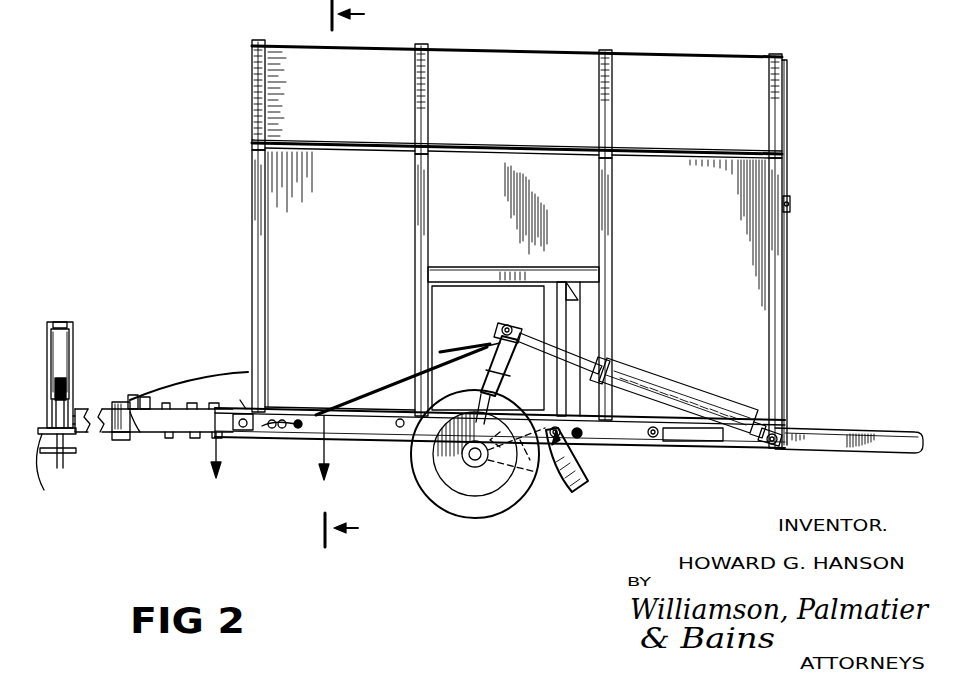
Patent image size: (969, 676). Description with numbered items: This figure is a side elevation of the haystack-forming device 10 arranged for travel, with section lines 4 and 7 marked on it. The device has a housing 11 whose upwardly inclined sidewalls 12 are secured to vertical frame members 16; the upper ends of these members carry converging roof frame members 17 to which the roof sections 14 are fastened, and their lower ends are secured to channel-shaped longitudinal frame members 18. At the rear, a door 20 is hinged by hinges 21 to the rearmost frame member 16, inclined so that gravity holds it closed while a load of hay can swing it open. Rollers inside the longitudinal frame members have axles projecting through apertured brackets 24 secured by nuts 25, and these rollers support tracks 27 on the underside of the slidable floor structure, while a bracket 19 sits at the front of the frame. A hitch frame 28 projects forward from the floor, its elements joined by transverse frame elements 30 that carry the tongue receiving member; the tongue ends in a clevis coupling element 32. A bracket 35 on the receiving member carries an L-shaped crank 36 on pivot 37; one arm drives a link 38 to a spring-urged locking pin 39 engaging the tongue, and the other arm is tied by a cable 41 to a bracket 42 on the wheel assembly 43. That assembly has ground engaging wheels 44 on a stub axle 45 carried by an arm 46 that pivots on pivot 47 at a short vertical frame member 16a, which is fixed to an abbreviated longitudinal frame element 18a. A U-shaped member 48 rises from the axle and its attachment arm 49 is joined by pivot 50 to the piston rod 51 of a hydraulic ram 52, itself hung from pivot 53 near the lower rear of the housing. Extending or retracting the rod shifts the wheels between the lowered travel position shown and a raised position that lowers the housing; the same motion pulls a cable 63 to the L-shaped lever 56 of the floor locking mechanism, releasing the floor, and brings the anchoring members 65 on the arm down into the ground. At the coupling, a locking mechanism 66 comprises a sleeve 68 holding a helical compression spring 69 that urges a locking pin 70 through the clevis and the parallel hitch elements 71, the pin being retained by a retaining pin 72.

The haystack-forming device 10 is at (126, 76).
The section line 4 is at (334, 273).
The section line 7 is at (268, 461).
The housing 11 is at (776, 138).
The sidewall 12 is at (757, 234).
The roof section 14 is at (722, 68).
The vertical frame member 16 is at (252, 190).
The roof frame member 17 is at (252, 73).
The short vertical frame member 16a is at (573, 282).
The longitudinal frame member 18 is at (690, 446).
The longitudinal frame element 18a is at (460, 267).
The frame bracket 19 is at (250, 400).
The rear closure member 20 is at (790, 328).
The hinge 21 is at (792, 198).
The apertured bracket 24 is at (723, 450).
The nut 25 is at (654, 450).
The track 27 is at (872, 436).
The hitch frame 28 is at (165, 440).
The transverse frame element 30 is at (232, 403).
The coupling element 32 is at (76, 408).
The bracket 35 is at (162, 398).
The L-shaped crank 36 is at (150, 388).
The pivot 37 is at (138, 386).
The link 38 is at (130, 395).
The locking pin 39 is at (136, 437).
The cable 41 is at (244, 400).
The bracket 42 is at (492, 344).
The wheel assembly 43 is at (484, 514).
The ground engaging wheel 44 is at (456, 512).
The stub axle 45 is at (470, 456).
The arm 46 is at (530, 492).
The pivot 47 is at (566, 440).
The U-shaped member 48 is at (500, 393).
The attachment arm 49 is at (505, 362).
The pivot 50 is at (514, 328).
The piston rod 51 is at (592, 366).
The hydraulic ram 52 is at (690, 388).
The pivot 53 is at (782, 432).
The L-shaped lever 56 is at (274, 440).
The cable 63 is at (362, 405).
The anchoring member 65 is at (580, 494).
The locking mechanism 66 is at (76, 318).
The sleeve 68 is at (60, 322).
The helical compression spring 69 is at (70, 400).
The locking pin 70 is at (64, 472).
The hitch element 71 is at (44, 462).
The retaining pin 72 is at (72, 446).